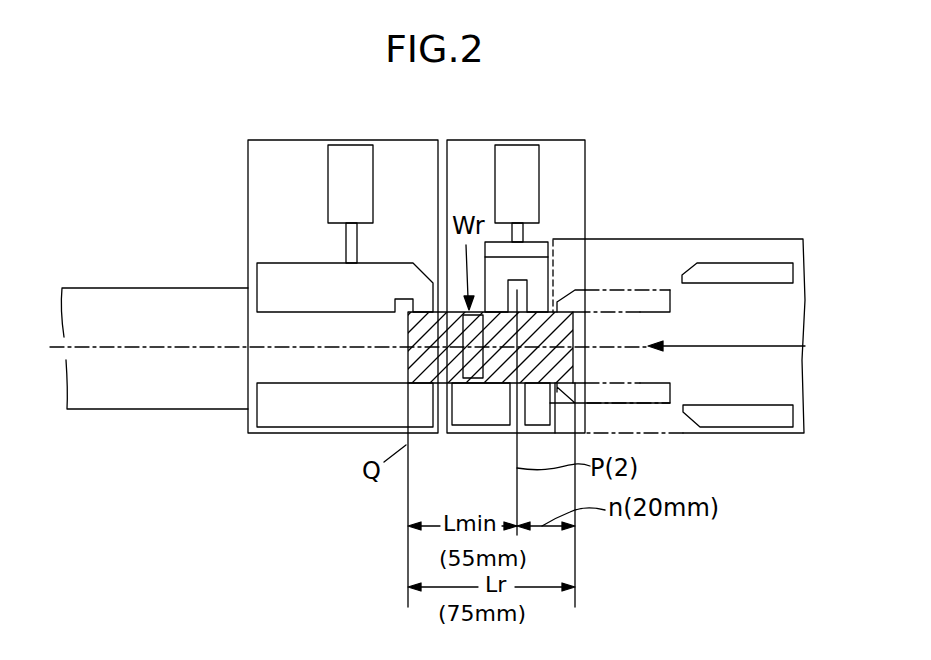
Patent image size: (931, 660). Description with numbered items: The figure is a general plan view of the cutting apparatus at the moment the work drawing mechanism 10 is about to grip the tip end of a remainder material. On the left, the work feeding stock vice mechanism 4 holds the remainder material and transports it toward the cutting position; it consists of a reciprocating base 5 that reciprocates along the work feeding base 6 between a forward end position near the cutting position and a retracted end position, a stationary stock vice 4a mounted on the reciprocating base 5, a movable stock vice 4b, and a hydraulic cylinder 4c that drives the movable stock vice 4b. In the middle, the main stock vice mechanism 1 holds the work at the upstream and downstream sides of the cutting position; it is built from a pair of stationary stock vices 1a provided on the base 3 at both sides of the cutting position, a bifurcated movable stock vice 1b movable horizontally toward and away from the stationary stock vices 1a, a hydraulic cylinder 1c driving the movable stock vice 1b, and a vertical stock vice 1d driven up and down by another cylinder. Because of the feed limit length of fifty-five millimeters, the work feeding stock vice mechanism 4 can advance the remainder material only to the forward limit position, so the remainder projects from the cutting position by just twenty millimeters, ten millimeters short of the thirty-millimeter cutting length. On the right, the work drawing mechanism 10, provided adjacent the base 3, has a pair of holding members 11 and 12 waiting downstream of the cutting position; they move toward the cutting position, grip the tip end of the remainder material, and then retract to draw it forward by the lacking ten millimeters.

The main stock vice mechanism 1 is at (487, 308).
The stationary stock vice 1a is at (538, 410).
The bifurcated movable stock vice 1b is at (535, 285).
The hydraulic cylinder 1c is at (507, 168).
The vertical stock vice 1d is at (462, 358).
The base 3 is at (555, 168).
The work feeding stock vice mechanism 4 is at (320, 294).
The stationary stock vice 4a is at (325, 413).
The movable stock vice 4b is at (292, 291).
The hydraulic cylinder 4c is at (352, 170).
The reciprocating base 5 is at (270, 178).
The work feeding base 6 is at (182, 382).
The work drawing mechanism 10 is at (741, 226).
The holding member 11 is at (715, 415).
The holding member 12 is at (657, 297).